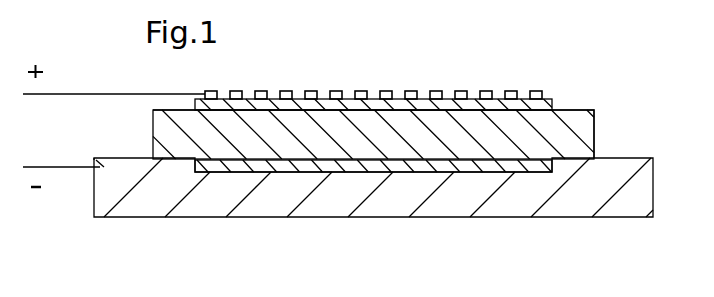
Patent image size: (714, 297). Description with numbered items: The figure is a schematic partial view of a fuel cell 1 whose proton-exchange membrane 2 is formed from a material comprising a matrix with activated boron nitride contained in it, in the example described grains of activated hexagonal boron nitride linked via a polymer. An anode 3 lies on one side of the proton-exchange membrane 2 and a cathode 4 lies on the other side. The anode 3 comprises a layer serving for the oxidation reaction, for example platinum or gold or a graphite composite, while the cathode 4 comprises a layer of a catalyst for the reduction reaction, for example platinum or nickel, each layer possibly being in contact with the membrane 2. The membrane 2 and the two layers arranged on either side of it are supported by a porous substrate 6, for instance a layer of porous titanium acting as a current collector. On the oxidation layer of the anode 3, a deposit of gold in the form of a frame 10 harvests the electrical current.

The fuel cell 1 is at (627, 130).
The proton-exchange membrane 2 is at (152, 136).
The anode 3 is at (552, 88).
The cathode 4 is at (528, 175).
The porous substrate 6 is at (138, 206).
The frame 10 is at (383, 91).